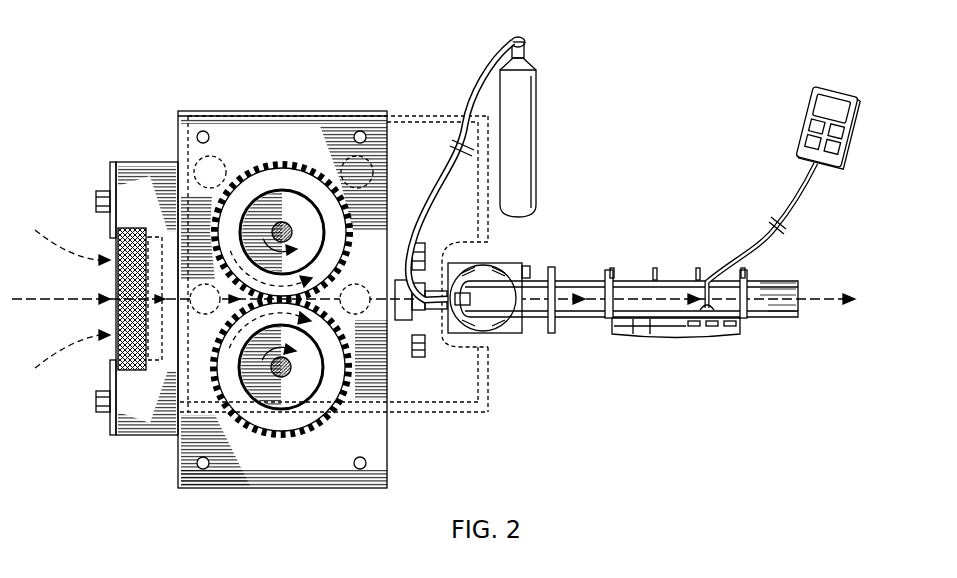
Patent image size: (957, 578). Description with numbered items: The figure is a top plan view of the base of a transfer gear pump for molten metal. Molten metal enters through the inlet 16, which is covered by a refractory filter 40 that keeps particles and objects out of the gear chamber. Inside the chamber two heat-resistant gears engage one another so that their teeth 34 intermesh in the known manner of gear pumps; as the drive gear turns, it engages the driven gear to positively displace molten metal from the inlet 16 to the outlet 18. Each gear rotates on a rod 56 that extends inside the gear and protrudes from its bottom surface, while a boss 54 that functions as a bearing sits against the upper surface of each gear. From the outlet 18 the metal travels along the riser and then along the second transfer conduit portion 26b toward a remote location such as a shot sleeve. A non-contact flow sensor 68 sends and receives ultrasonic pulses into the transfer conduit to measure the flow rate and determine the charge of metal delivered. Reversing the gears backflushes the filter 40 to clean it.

The inlet 16 is at (181, 293).
The filter 40 is at (128, 245).
The outlet 18 is at (384, 312).
The teeth 34 is at (233, 171).
The boss 54 is at (285, 203).
The rod 56 is at (290, 225).
The second transfer conduit portion 26b is at (597, 290).
The non-contact flow sensor 68 is at (697, 340).